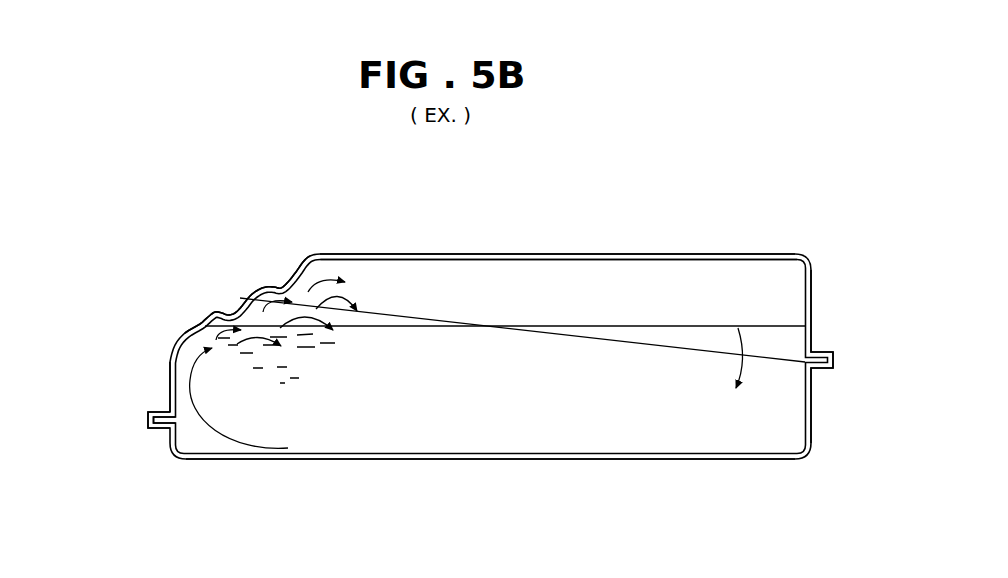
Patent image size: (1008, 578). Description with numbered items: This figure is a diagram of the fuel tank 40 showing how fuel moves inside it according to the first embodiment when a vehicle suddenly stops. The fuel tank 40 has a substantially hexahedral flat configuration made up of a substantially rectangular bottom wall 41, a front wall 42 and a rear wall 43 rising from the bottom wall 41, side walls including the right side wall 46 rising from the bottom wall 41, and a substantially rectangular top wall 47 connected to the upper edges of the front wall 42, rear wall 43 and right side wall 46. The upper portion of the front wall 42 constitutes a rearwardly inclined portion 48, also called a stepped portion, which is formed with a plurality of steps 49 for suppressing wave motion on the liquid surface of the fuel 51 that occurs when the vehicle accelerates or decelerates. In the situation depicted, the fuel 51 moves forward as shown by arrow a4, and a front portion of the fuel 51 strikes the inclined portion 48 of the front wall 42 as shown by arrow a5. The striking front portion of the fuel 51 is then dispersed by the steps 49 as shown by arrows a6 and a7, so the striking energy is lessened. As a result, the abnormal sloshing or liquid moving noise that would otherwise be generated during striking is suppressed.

The fuel tank 40 is at (232, 150).
The bottom wall 41 is at (472, 460).
The front wall 42 is at (157, 387).
The rear wall 43 is at (811, 294).
The right side wall 46 is at (545, 282).
The top wall 47 is at (497, 252).
The inclined portion 48 is at (174, 352).
The steps 49 is at (184, 331).
The fuel 51 is at (667, 325).
The arrow a4 is at (758, 363).
The arrow a5 is at (239, 398).
The arrows a6 is at (204, 321).
The arrows a7 is at (262, 356).